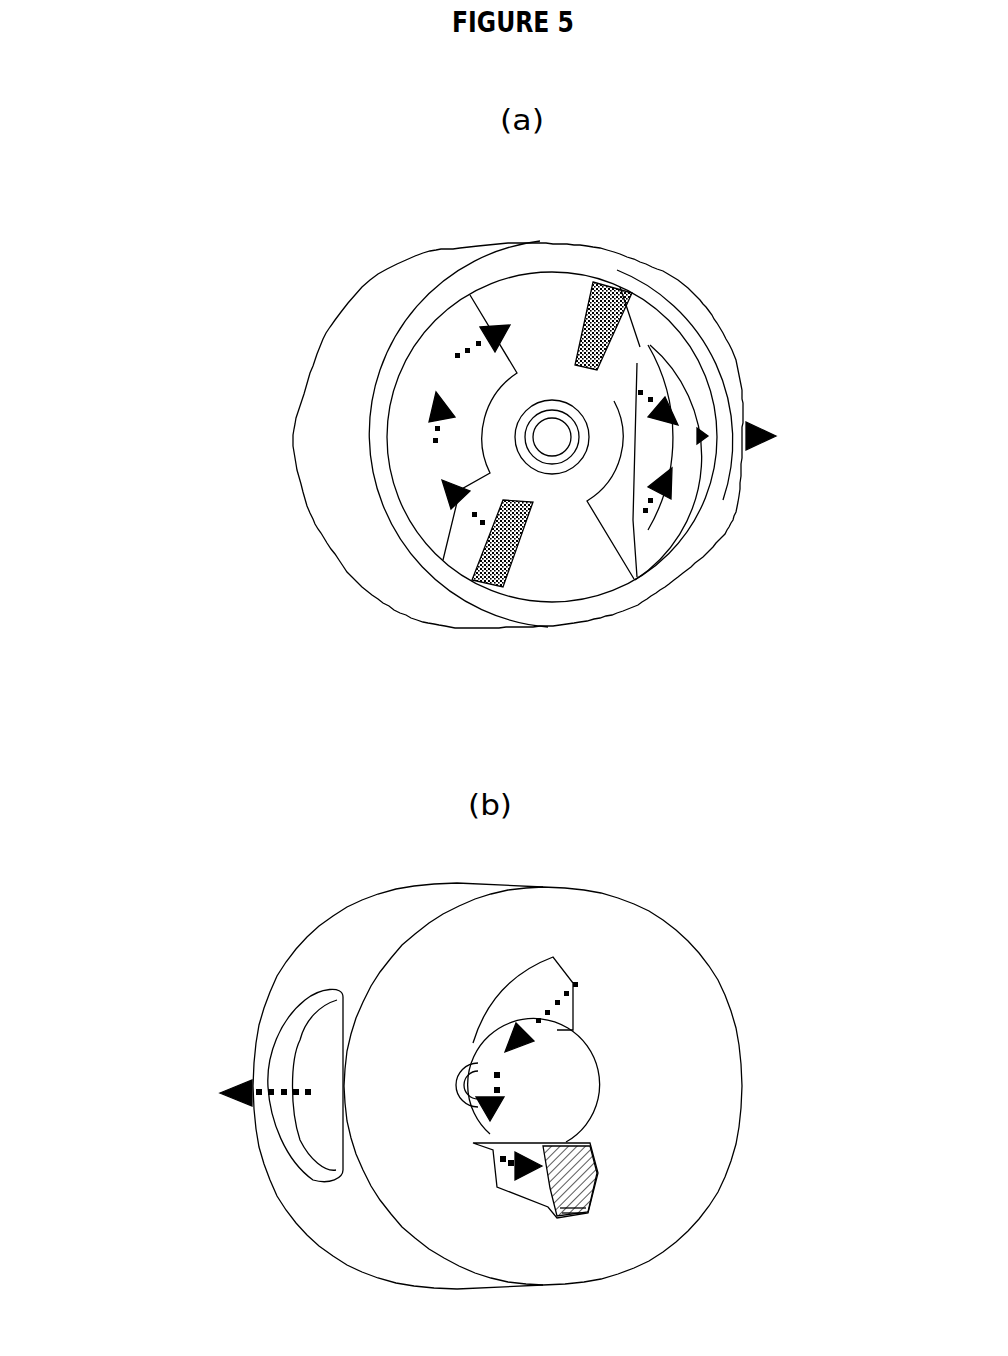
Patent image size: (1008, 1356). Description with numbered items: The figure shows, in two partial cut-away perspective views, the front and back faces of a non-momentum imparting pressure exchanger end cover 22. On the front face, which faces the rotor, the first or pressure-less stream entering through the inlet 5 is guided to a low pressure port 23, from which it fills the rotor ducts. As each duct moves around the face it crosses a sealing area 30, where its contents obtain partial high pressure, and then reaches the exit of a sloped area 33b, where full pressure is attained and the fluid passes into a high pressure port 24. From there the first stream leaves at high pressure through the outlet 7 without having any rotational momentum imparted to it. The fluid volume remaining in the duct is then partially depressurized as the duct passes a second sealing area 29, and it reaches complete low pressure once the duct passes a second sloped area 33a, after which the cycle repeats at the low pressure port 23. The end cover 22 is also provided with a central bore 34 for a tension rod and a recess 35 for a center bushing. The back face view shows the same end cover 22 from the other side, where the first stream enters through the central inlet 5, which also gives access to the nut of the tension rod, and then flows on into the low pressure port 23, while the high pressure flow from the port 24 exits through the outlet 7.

The inlet 5 is at (467, 533).
The outlet 7 is at (647, 477).
The end cover 22 is at (326, 430).
The low pressure port 23 is at (417, 417).
The high pressure port 24 is at (647, 447).
The sealing area 29 is at (552, 565).
The sealing area 30 is at (531, 335).
The sloped area 33a is at (503, 590).
The sloped area 33b is at (615, 290).
The central bore 34 is at (548, 423).
The recess 35 is at (590, 557).